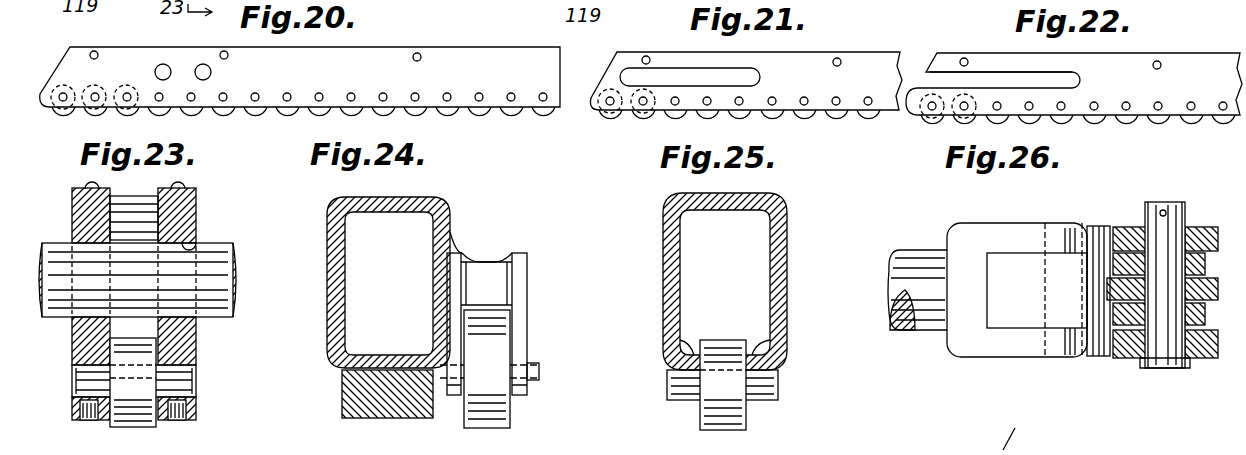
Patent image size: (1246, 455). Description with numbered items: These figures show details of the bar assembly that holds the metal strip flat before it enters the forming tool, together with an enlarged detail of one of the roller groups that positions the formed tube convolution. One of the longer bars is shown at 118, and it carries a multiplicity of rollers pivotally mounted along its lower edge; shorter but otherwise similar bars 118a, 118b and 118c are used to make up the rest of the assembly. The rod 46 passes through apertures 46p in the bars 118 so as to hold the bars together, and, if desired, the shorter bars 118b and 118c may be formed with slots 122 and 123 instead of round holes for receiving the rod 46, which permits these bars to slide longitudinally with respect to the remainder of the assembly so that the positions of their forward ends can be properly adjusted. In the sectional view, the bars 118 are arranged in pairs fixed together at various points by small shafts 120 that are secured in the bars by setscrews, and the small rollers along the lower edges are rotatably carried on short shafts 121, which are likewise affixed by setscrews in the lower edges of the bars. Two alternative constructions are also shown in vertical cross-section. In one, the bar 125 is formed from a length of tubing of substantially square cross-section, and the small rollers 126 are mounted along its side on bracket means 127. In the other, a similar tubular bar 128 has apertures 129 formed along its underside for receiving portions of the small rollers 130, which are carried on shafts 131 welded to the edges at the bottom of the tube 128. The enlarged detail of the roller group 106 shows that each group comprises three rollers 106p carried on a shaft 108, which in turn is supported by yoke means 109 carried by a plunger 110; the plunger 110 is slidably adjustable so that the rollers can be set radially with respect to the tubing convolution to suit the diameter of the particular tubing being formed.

In FIG. 20, the shorter bar 118a is at (460, 62).
In FIG. 21, the shorter bar 118b is at (880, 58).
In FIG. 22, the shorter bar 118c is at (1196, 68).
In FIG. 21, the slot 122 is at (664, 72).
In FIG. 22, the slot 123 is at (972, 78).
In FIG. 23, the rod 46 is at (214, 274).
In FIG. 23, the aperture 46p is at (198, 246).
In FIG. 23, the longer bar 118 is at (122, 448).
In FIG. 23, the small shaft 120 is at (122, 215).
In FIG. 23, the short shaft 121 is at (80, 381).
In FIG. 24, the bar 125 is at (450, 221).
In FIG. 24, the small roller 126 is at (505, 420).
In FIG. 24, the bracket means 127 is at (520, 300).
In FIG. 25, the bar 128 is at (788, 265).
In FIG. 25, the aperture 129 is at (756, 352).
In FIG. 25, the small roller 130 is at (748, 420).
In FIG. 25, the shaft 131 is at (780, 385).
In FIG. 26, the group of rollers 106 is at (1222, 189).
In FIG. 26, the roller 106p is at (1116, 322).
In FIG. 26, the shaft 108 is at (1140, 366).
In FIG. 26, the yoke means 109 is at (1135, 227).
In FIG. 26, the plunger 110 is at (910, 335).